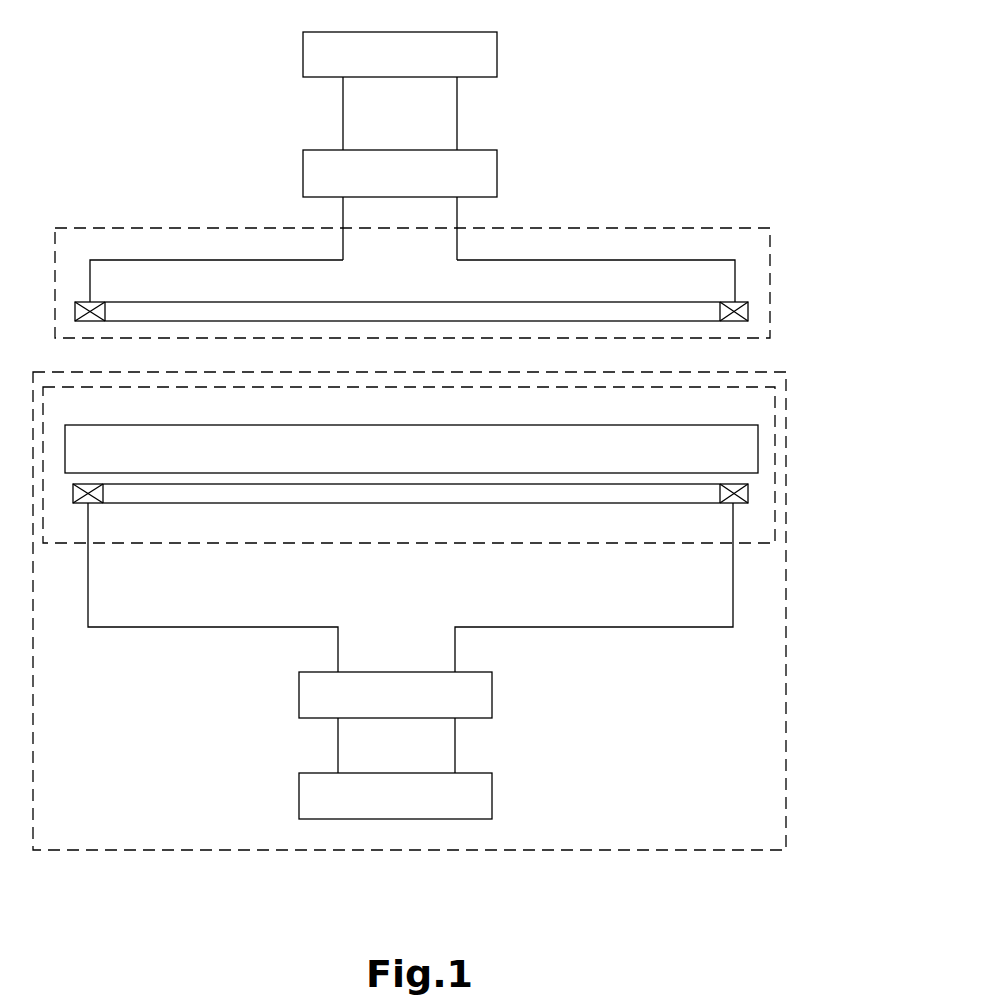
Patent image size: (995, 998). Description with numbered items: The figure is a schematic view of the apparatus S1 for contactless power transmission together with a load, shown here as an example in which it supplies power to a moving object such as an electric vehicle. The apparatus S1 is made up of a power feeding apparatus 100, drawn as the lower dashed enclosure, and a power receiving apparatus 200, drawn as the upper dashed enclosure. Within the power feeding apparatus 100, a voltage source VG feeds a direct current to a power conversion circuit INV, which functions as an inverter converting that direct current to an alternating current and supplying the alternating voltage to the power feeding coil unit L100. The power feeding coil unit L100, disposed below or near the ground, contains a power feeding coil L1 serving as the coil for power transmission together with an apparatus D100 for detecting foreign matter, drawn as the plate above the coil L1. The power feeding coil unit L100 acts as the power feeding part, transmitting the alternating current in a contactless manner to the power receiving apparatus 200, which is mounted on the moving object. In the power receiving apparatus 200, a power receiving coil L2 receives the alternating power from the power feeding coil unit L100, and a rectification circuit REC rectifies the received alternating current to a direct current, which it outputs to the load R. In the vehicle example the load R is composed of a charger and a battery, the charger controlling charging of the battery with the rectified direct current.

The apparatus for contactless power transmission S1 is at (421, 901).
The load R is at (497, 53).
The rectification circuit REC is at (497, 172).
The power receiving apparatus 200 is at (610, 227).
The power receiving coil L2 is at (748, 311).
The power feeding apparatus 100 is at (786, 708).
The power feeding coil unit L100 is at (775, 532).
The apparatus for detecting foreign matter D100 is at (758, 449).
The power feeding coil L1 is at (748, 497).
The power conversion circuit INV is at (492, 696).
The voltage source VG is at (492, 795).